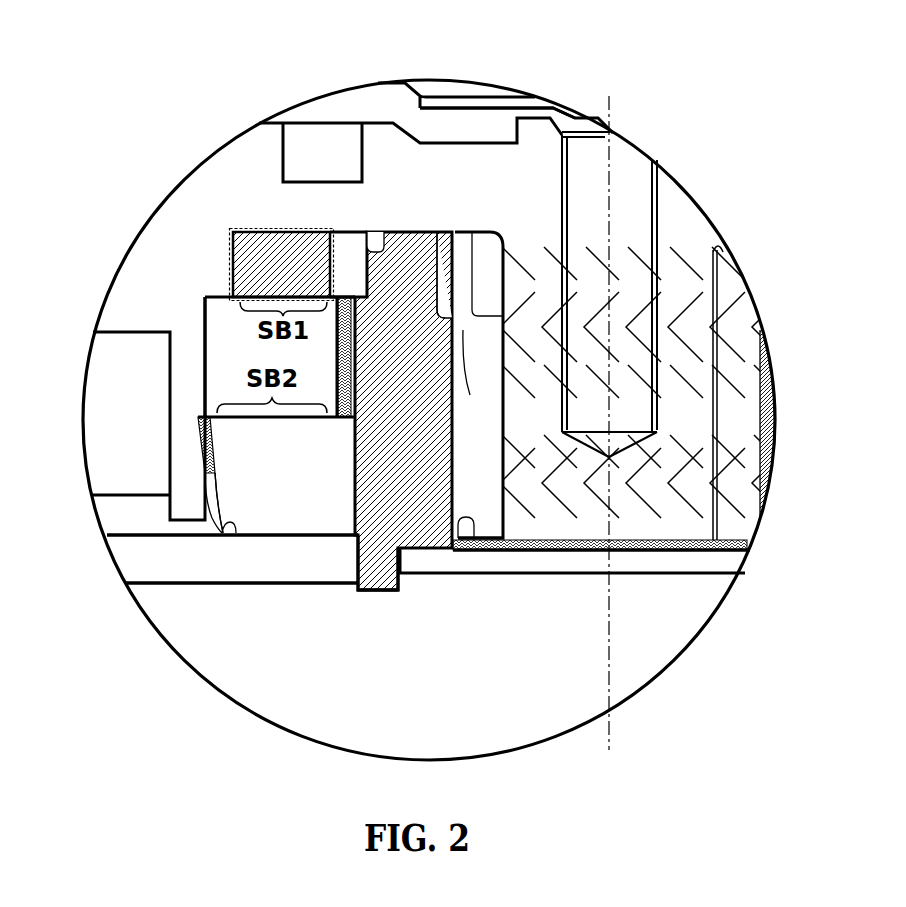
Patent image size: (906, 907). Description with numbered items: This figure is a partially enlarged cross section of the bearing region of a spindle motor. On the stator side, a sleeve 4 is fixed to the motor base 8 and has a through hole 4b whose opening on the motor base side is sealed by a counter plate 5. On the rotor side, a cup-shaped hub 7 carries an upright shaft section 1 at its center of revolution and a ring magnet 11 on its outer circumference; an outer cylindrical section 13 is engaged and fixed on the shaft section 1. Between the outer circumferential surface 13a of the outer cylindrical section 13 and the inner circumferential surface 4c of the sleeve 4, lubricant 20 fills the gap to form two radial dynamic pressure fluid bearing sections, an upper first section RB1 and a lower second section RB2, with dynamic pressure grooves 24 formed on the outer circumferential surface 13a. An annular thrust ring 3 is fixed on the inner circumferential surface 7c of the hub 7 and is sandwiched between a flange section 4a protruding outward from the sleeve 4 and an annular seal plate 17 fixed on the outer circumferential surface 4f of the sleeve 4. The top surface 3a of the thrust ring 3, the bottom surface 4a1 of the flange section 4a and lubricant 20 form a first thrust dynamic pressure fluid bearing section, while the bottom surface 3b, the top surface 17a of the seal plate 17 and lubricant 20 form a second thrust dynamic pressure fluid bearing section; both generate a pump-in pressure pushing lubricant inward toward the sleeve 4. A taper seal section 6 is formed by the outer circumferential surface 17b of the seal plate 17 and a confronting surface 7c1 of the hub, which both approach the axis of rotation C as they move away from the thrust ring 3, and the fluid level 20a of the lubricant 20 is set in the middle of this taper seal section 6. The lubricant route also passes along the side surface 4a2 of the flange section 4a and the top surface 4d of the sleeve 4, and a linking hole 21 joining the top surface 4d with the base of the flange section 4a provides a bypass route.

The shaft section 1 is at (650, 530).
The thrust ring 3 is at (225, 327).
The top surface of the thrust ring 3a is at (207, 290).
The bottom surface of the thrust ring 3b is at (315, 545).
The sleeve 4 is at (408, 253).
The flange section 4a is at (297, 227).
The bottom surface of the flange section 4a1 is at (273, 227).
The side surface of the flange section 4a2 is at (255, 230).
The through hole 4b is at (430, 247).
The inner circumferential surface of the sleeve 4c is at (398, 600).
The top surface of the sleeve 4d is at (412, 247).
The outer circumferential surface of the sleeve 4f is at (380, 590).
The counter plate 5 is at (622, 562).
The taper seal section 6 is at (215, 545).
The hub 7 is at (215, 190).
The inner circumferential surface of the hub 7c is at (197, 310).
The confronting surface 7c1 is at (217, 533).
The motor base 8 is at (335, 570).
The ring magnet 11 is at (107, 363).
The outer cylindrical section 13 is at (468, 247).
The outer circumferential surface of the outer cylindrical section 13a is at (478, 545).
The seal plate 17 is at (248, 545).
The top surface of the seal plate 17a is at (278, 545).
The outer circumferential surface of the seal plate 17b is at (233, 545).
The lubricating fluid 20 is at (233, 235).
The fluid level 20a is at (205, 490).
The linking hole 21 is at (343, 253).
The dynamic pressure grooves 24 is at (697, 257).
The axis of rotation C is at (608, 409).
The first radial dynamic pressure fluid bearing section RB1 is at (560, 243).
The second radial dynamic pressure fluid bearing section RB2 is at (538, 540).